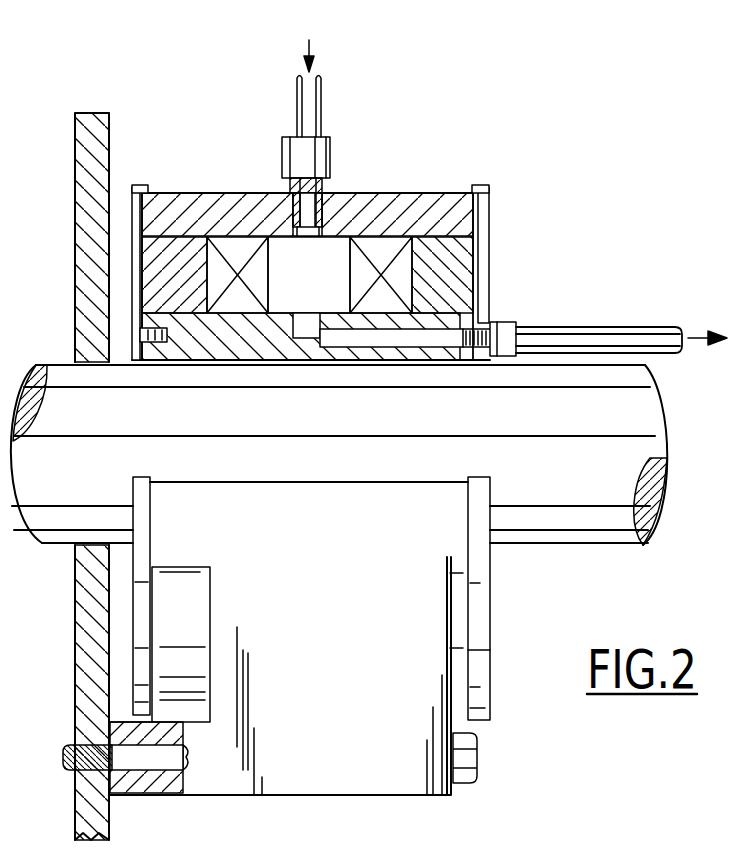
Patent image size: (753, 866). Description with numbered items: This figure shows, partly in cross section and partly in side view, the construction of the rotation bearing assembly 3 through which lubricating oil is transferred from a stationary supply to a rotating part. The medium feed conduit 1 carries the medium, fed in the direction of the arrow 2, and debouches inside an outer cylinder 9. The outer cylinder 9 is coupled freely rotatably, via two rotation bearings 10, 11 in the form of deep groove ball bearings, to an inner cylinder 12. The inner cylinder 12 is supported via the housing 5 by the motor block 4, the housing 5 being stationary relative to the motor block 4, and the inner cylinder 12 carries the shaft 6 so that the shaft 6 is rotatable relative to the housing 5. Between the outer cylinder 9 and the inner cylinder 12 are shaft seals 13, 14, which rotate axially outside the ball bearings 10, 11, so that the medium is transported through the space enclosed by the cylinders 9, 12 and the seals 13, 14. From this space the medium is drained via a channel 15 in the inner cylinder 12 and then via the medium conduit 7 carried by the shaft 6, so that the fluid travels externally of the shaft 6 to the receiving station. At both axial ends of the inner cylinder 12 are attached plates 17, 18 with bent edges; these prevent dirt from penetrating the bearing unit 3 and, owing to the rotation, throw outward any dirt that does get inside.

The medium feed conduit 1 is at (317, 107).
The arrow 2 is at (313, 43).
The rotation bearing assembly 3 is at (425, 225).
The motor block 4 is at (80, 232).
The housing 5 is at (357, 770).
The shaft 6 is at (603, 455).
The medium conduit 7 is at (597, 333).
The outer cylinder 9 is at (397, 207).
The rotation bearing 10 is at (242, 250).
The rotation bearing 11 is at (428, 198).
The inner cylinder 12 is at (238, 350).
The shaft seal 13 is at (176, 250).
The shaft seal 14 is at (465, 256).
The channel 15 is at (428, 338).
The plate 17 is at (132, 207).
The plate 18 is at (487, 187).